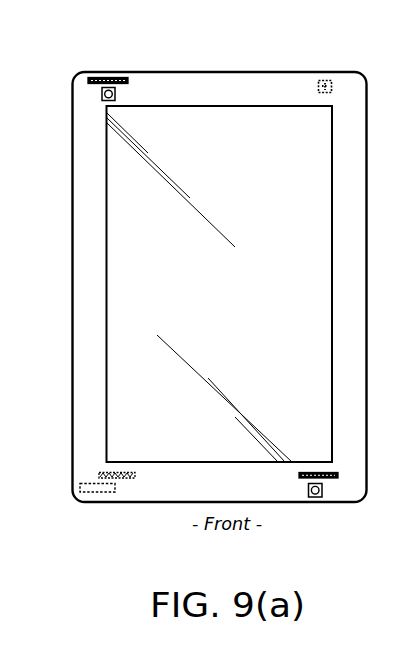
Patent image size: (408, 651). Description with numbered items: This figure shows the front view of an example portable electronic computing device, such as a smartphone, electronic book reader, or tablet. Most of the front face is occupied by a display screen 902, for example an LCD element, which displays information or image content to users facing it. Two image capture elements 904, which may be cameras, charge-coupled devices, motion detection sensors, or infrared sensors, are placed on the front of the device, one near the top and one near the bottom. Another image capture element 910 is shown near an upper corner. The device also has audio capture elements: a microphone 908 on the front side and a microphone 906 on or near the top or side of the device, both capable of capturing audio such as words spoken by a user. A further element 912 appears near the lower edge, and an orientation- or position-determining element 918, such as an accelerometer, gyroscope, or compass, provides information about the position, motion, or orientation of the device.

The display screen 902 is at (106, 207).
The image capture element 904 is at (101, 94).
The microphone 906 is at (117, 78).
The microphone 908 is at (328, 478).
The image capture element 910 is at (322, 81).
The microphone 912 is at (118, 478).
The orientation- or position-determining element 918 is at (95, 492).